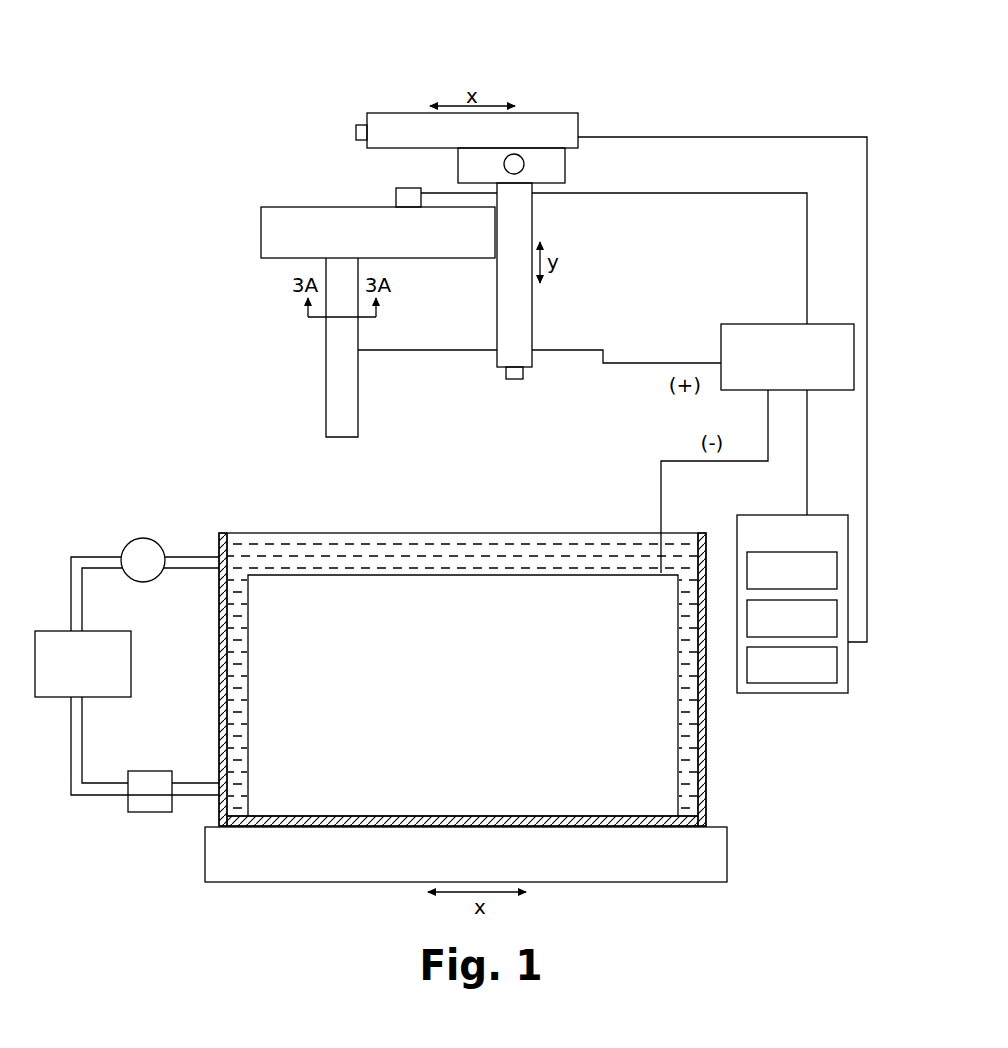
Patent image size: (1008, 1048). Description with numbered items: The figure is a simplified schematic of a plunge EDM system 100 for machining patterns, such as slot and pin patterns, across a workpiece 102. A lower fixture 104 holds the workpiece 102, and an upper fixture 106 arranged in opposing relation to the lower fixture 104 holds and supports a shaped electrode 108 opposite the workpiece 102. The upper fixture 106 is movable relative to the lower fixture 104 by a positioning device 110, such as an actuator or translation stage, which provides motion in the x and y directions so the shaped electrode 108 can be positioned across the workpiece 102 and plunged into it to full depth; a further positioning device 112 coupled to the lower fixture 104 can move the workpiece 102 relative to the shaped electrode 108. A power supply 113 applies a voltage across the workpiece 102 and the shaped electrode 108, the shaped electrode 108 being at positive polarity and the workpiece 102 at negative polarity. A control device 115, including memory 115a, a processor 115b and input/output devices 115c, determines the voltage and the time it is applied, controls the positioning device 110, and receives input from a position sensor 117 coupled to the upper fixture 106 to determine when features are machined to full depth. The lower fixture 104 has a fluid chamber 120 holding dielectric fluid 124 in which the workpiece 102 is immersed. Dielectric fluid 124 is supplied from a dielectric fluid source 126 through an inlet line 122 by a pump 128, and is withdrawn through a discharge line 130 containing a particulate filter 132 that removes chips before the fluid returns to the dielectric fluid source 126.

The plunge EDM system 100 is at (467, 72).
The workpiece 102 is at (283, 570).
The lower fixture 104 is at (706, 772).
The upper fixture 106 is at (297, 205).
The shaped electrode 108 is at (325, 422).
The positioning device 110 is at (562, 112).
The positioning device 112 is at (727, 858).
The power supply 113 is at (769, 369).
The control device 115 is at (774, 544).
The memory 115a is at (768, 584).
The processor 115b is at (768, 632).
The input/output devices 115c is at (768, 679).
The position sensor 117 is at (395, 195).
The fluid chamber 120 is at (692, 746).
The inlet line 122 is at (190, 555).
The dielectric fluid 124 is at (577, 550).
The dielectric fluid source 126 is at (61, 676).
The pump 128 is at (138, 537).
The discharge line 130 is at (197, 797).
The particulate filter 132 is at (138, 815).